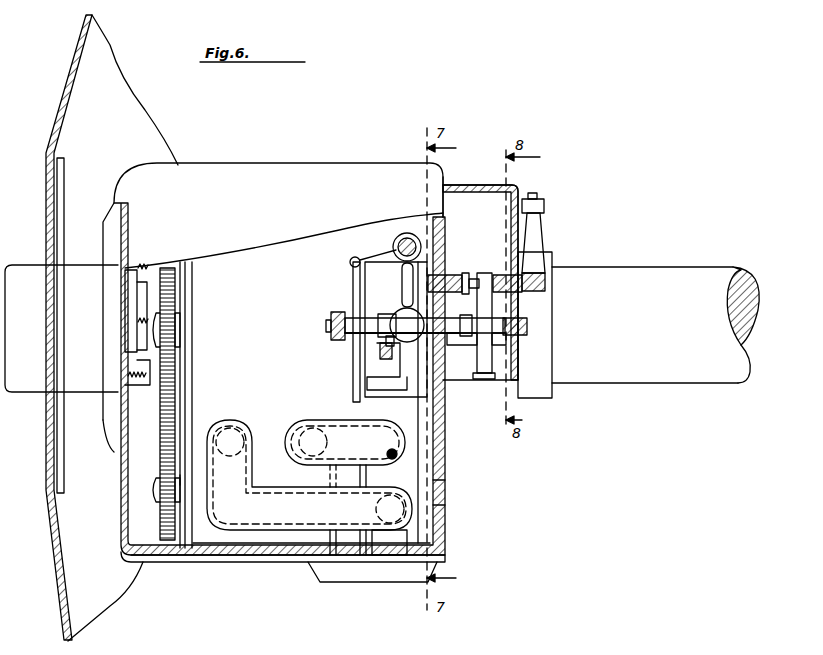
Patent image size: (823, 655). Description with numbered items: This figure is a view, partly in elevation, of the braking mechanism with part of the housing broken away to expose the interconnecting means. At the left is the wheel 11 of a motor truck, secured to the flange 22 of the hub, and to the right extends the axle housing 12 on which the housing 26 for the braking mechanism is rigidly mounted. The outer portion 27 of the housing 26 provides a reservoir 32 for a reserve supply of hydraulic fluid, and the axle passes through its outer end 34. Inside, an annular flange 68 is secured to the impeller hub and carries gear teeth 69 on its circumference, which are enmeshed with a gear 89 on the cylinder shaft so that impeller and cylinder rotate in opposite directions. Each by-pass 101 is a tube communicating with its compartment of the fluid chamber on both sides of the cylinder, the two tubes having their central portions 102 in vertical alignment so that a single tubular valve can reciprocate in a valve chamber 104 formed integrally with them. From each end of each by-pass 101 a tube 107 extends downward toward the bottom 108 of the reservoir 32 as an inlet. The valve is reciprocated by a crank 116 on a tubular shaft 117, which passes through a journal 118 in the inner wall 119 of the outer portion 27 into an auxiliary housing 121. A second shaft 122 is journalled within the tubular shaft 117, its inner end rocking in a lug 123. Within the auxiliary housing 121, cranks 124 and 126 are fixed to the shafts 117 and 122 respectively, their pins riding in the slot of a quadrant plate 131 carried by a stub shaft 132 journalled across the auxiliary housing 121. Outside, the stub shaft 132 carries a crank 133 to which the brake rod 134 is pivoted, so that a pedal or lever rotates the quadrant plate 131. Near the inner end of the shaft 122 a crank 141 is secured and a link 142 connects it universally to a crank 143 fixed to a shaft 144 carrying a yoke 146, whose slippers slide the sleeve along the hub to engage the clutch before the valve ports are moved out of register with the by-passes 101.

The wheel 11 is at (70, 80).
The axle housing 12 is at (650, 276).
The flange 22 is at (96, 349).
The housing 26 is at (459, 461).
The outer portion 27 is at (446, 510).
The reservoir 32 is at (150, 556).
The outer end 34 is at (118, 482).
The annular flange 68 is at (162, 400).
The gear teeth 69 is at (163, 426).
The gear 89 is at (162, 520).
The by-pass 101 is at (372, 447).
The central portion 102 is at (405, 510).
The valve chamber 104 is at (405, 415).
The tube 107 is at (388, 558).
The bottom 108 is at (298, 562).
The crank 116 is at (380, 355).
The tubular shaft 117 is at (388, 337).
The journal 118 is at (450, 342).
The inner wall 119 is at (463, 498).
The auxiliary housing 121 is at (478, 186).
The second shaft 122 is at (340, 336).
The lug 123 is at (330, 318).
The crank 124 is at (484, 380).
The crank 126 is at (512, 346).
The quadrant plate 131 is at (530, 308).
The stub shaft 132 is at (452, 283).
The crank 133 is at (541, 246).
The brake rod 134 is at (535, 200).
The crank 141 is at (347, 316).
The link 142 is at (355, 288).
The crank 143 is at (383, 252).
The shaft 144 is at (408, 233).
The yoke 146 is at (431, 196).